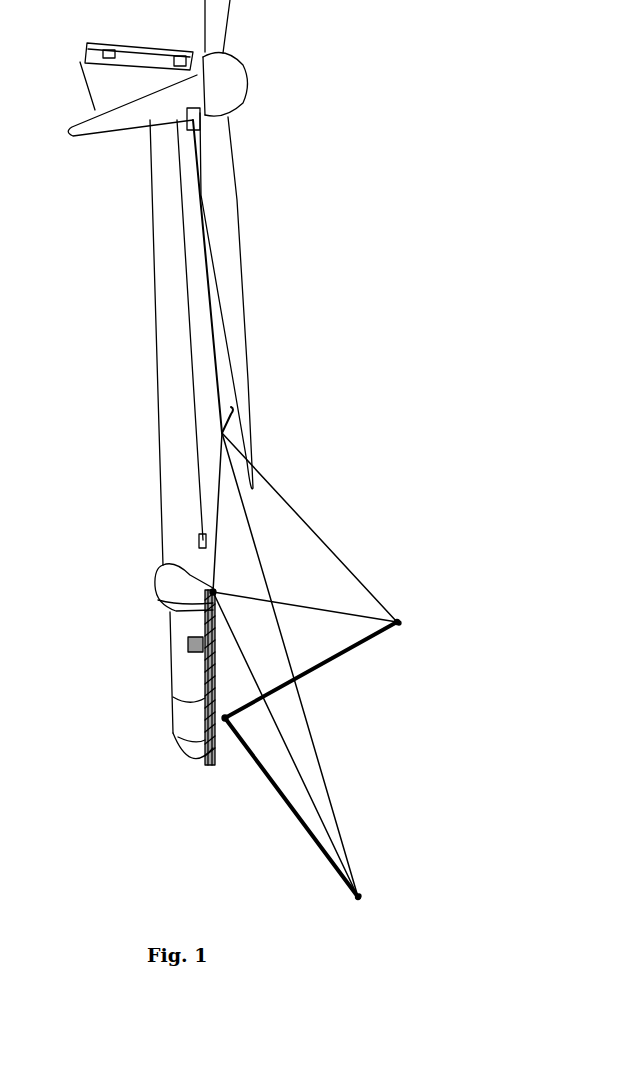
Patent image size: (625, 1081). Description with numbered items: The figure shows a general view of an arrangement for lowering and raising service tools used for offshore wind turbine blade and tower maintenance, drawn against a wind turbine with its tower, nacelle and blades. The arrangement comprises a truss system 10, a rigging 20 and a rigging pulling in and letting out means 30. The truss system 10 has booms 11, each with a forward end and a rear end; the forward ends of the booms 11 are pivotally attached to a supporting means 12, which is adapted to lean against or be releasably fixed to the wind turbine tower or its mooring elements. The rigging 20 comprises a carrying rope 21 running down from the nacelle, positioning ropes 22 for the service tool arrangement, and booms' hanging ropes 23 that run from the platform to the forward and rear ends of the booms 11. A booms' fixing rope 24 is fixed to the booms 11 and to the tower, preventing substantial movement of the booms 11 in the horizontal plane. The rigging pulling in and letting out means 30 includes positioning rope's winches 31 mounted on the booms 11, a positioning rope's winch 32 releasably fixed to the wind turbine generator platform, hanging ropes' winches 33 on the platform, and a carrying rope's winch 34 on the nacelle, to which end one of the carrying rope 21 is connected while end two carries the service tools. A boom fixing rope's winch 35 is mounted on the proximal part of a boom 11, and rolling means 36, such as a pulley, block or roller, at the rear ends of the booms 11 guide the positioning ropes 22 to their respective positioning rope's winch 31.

The truss system 10 is at (343, 759).
The boom 11 is at (305, 833).
The supporting means 12 is at (216, 757).
The rigging 20 is at (302, 517).
The carrying rope 21 is at (210, 317).
The positioning rope 22 is at (213, 507).
The booms' hanging rope 23 is at (348, 610).
The booms' fixing rope 24 is at (178, 737).
The rigging pulling in and letting out means 30 is at (215, 592).
The positioning rope's winch 31 is at (355, 895).
The positioning rope's winch 32 is at (200, 594).
The hanging ropes' winch 33 is at (207, 610).
The carrying rope's winch 34 is at (190, 127).
The boom fixing rope's winch 35 is at (250, 768).
The rolling means 36 is at (360, 896).